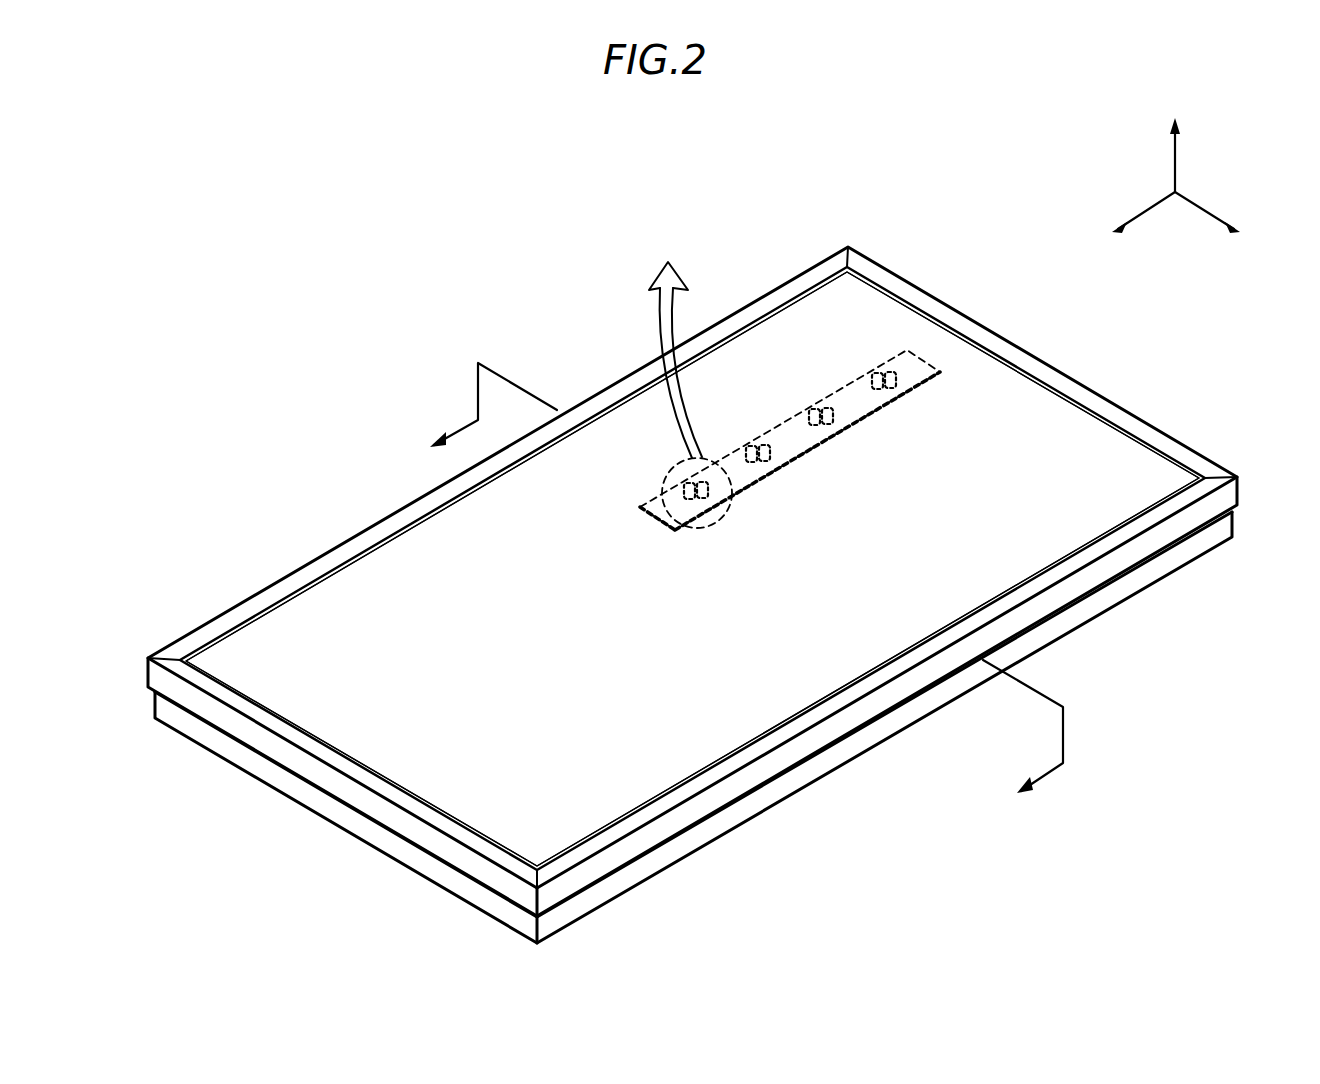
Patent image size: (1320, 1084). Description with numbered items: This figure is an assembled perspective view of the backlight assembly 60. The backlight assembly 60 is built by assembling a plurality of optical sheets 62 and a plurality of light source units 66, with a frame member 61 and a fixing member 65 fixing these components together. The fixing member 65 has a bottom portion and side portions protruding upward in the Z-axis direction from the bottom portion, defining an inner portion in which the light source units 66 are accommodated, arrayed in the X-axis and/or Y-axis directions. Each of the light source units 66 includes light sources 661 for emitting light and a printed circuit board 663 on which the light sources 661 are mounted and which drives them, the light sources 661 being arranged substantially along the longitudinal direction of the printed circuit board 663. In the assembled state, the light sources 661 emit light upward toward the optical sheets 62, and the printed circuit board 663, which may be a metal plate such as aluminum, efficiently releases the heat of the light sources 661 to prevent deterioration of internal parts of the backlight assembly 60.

The backlight assembly 60 is at (462, 290).
The frame member 61 is at (1140, 413).
The optical sheets 62 is at (587, 802).
The fixing member 65 is at (1088, 608).
The light source units 66 is at (840, 368).
The light sources 661 is at (892, 383).
The printed circuit board 663 is at (893, 363).